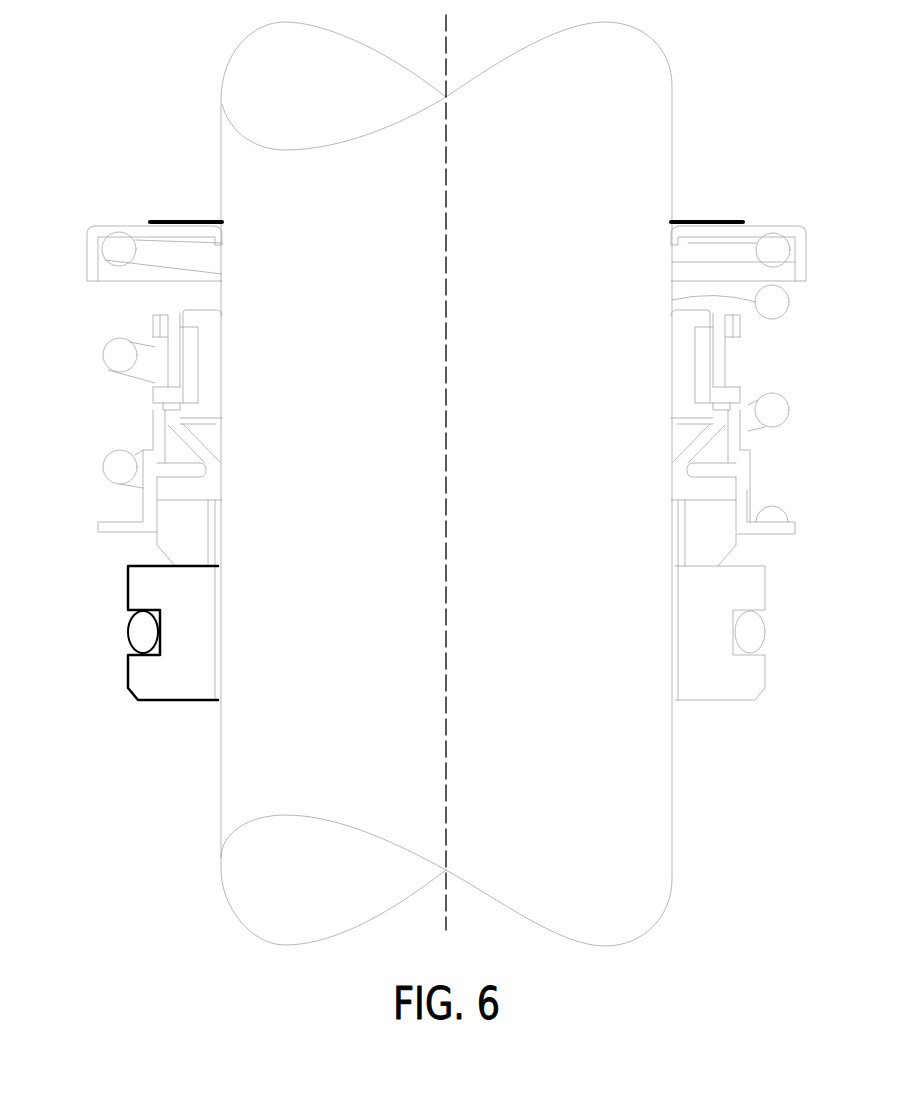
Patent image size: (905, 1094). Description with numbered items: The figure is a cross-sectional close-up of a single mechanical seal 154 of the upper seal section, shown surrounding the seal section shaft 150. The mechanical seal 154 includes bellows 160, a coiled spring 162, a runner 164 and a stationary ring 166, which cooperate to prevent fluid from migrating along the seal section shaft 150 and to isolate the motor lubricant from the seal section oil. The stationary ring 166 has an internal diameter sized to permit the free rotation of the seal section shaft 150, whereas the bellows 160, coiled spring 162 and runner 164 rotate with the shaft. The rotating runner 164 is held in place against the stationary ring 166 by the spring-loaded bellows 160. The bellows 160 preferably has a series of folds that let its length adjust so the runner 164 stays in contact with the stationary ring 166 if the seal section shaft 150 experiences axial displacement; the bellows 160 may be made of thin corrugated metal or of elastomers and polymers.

The seal section shaft 150 is at (640, 118).
The mechanical seal 154 is at (150, 152).
The bellows 160 is at (722, 495).
The coiled spring 162 is at (777, 315).
The runner 164 is at (715, 525).
The stationary ring 166 is at (763, 590).